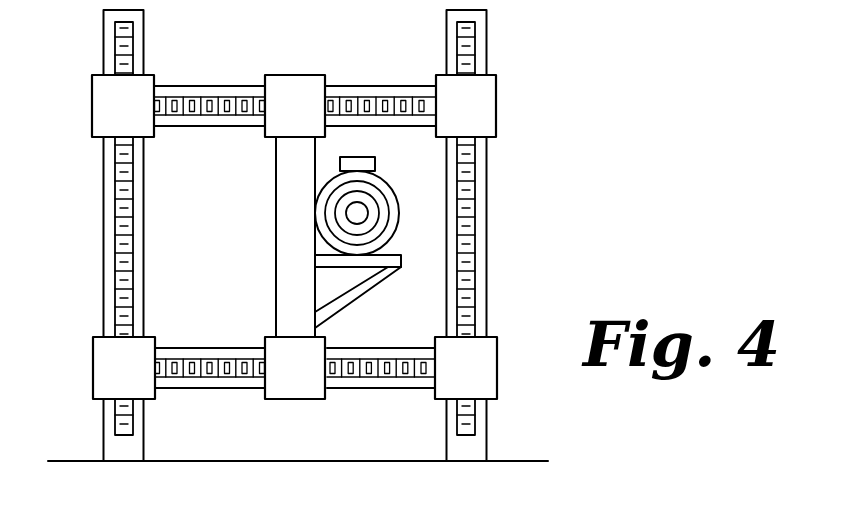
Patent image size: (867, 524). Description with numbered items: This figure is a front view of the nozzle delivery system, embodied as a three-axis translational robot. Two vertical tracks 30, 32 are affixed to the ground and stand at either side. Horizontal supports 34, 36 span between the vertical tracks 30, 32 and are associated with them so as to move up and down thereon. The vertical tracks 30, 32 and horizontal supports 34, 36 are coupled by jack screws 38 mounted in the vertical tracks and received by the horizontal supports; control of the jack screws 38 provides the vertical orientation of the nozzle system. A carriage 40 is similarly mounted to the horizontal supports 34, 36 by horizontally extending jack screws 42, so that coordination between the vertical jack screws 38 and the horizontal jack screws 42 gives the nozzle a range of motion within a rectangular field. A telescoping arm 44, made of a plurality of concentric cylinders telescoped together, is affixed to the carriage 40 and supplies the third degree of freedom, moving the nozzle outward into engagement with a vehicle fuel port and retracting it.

The vertical track 30 is at (487, 207).
The vertical track 32 is at (103, 248).
The horizontal support 34 is at (213, 88).
The horizontal support 36 is at (218, 337).
The jack screw 38 is at (476, 282).
The carriage 40 is at (276, 190).
The jack screw 42 is at (368, 97).
The telescoping arm 44 is at (398, 204).